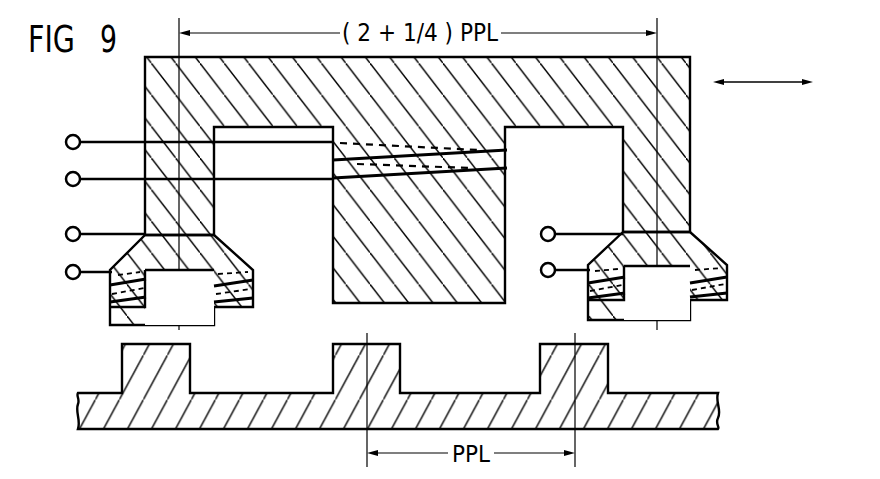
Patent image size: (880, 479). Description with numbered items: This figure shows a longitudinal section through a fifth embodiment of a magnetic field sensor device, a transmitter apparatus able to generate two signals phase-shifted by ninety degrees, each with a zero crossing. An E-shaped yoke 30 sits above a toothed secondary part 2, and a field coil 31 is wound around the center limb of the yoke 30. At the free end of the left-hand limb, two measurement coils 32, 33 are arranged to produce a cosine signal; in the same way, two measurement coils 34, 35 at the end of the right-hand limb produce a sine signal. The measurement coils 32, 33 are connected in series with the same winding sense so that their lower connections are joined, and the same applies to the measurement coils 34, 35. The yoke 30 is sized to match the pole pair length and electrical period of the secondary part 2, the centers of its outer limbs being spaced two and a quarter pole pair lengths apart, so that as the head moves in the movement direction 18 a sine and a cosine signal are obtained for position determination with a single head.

The secondary part 2 is at (704, 392).
The movement direction 18 is at (766, 80).
The E-shaped yoke 30 is at (668, 62).
The field coil 31 is at (480, 137).
The measurement coil 32 is at (110, 294).
The measurement coil 33 is at (250, 305).
The measurement coil 34 is at (590, 290).
The measurement coil 35 is at (712, 300).